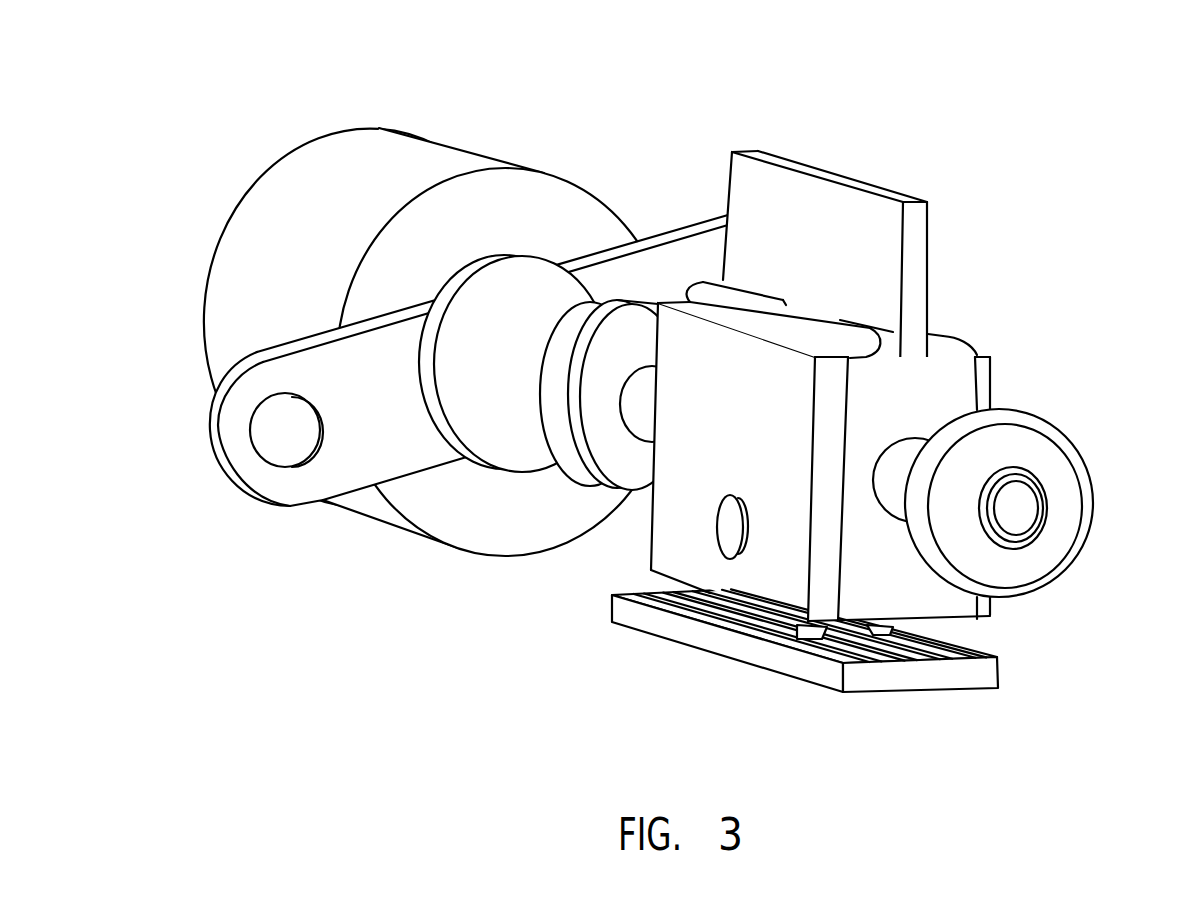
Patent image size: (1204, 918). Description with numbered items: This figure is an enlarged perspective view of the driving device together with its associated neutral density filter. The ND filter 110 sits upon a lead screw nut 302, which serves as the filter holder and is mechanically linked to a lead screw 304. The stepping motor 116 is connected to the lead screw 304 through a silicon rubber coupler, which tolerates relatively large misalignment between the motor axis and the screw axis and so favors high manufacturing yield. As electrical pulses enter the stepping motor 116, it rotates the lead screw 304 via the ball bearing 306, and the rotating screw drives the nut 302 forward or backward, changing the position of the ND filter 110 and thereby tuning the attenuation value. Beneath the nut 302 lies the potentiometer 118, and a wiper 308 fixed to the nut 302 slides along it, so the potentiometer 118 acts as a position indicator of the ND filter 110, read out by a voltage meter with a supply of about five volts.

The ND filter 110 is at (897, 193).
The stepping motor 116 is at (383, 122).
The potentiometer 118 is at (792, 674).
The lead screw nut 302 is at (965, 343).
The lead screw 304 is at (585, 532).
The ball bearing 306 is at (1060, 425).
The wiper 308 is at (945, 630).